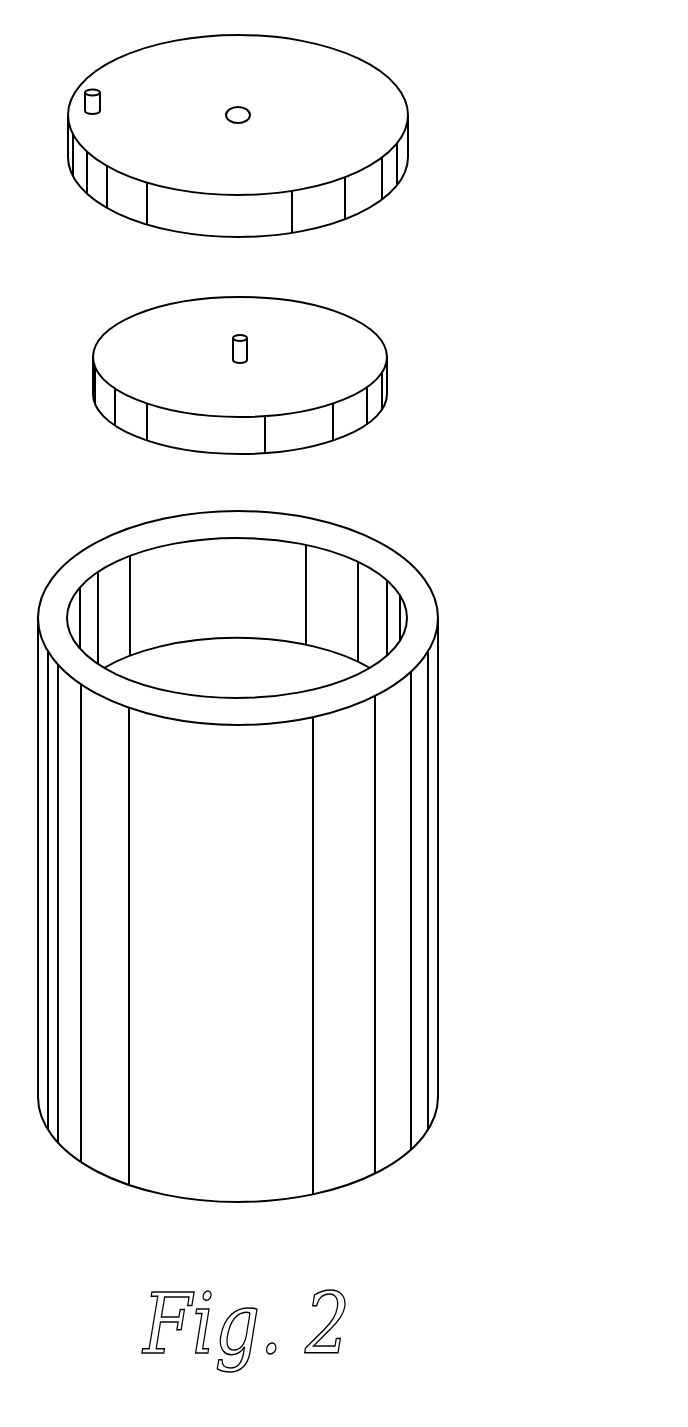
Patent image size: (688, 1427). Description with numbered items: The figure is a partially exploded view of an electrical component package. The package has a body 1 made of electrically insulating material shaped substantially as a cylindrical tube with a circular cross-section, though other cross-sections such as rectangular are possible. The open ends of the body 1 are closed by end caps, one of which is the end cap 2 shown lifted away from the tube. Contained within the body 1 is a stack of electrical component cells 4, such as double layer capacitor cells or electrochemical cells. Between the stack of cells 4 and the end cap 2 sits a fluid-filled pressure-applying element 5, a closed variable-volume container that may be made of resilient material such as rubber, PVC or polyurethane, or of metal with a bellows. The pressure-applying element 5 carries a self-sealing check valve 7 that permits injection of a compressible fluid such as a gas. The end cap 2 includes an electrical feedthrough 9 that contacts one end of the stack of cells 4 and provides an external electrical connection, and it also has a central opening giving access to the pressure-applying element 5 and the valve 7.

The body 1 is at (291, 841).
The end cap 2 is at (250, 124).
The stack of electrical component cells 4 is at (253, 660).
The fluid-filled pressure-applying element 5 is at (278, 339).
The check valve 7 is at (248, 350).
The electrical feedthrough 9 is at (100, 103).